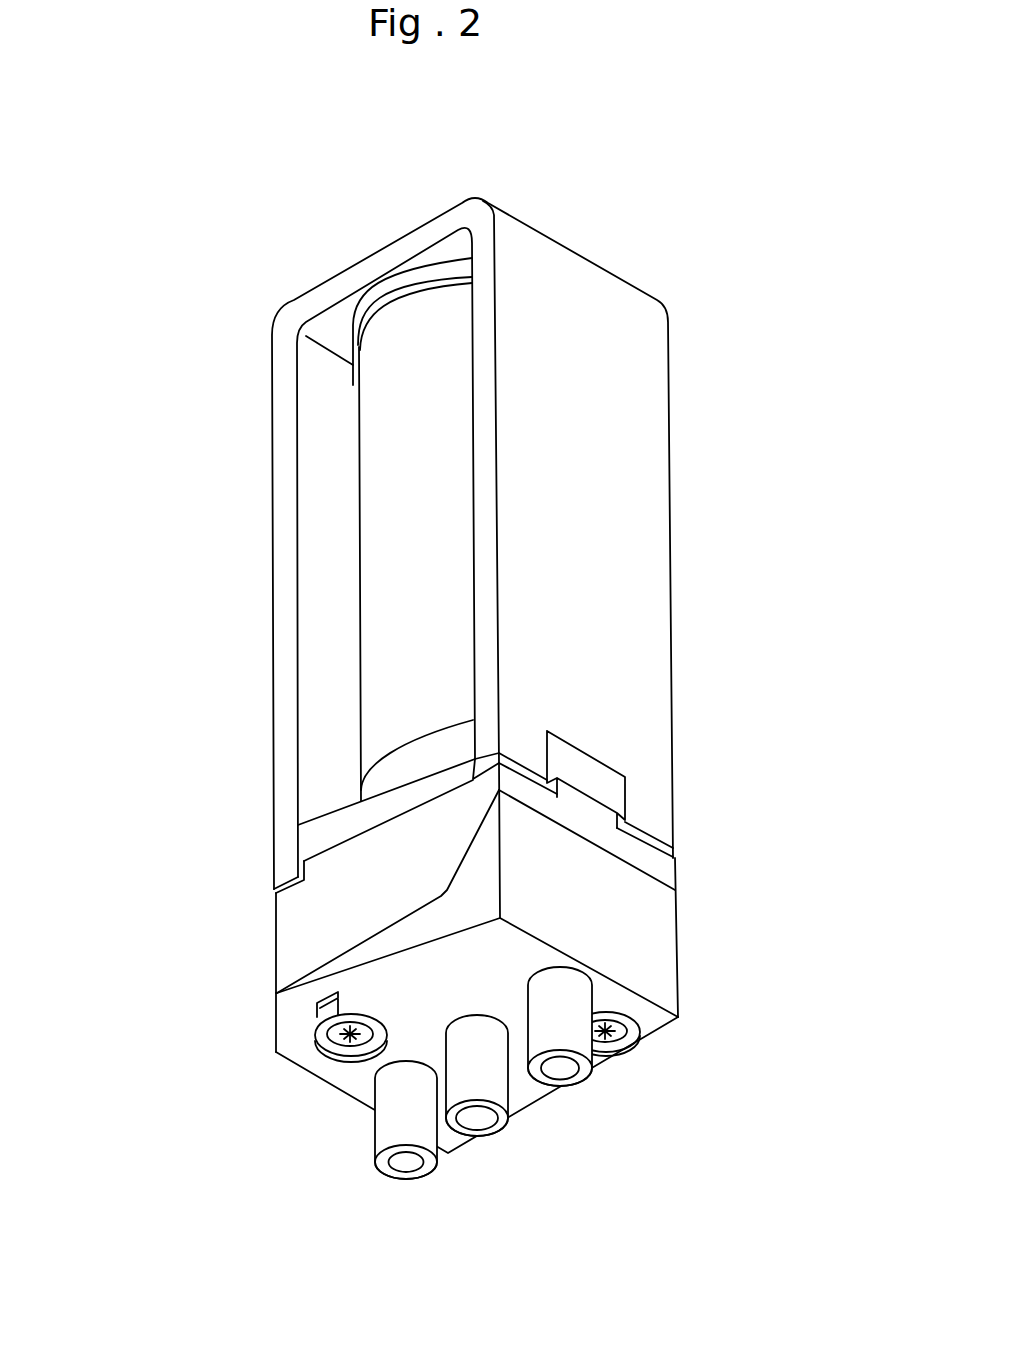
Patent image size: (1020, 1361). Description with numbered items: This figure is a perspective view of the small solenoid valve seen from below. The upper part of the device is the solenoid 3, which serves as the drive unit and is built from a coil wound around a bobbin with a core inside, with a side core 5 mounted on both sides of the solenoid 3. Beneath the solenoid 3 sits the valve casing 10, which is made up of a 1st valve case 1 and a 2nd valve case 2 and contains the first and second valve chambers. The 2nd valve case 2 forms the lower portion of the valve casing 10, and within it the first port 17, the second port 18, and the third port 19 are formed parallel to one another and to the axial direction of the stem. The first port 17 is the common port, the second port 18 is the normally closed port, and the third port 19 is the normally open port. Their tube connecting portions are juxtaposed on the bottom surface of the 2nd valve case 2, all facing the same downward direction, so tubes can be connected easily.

The 1st valve case 1 is at (295, 930).
The 2nd valve case 2 is at (165, 903).
The solenoid 3 is at (357, 425).
The side core 5 is at (282, 547).
The valve casing 10 is at (445, 958).
The first port 17 is at (408, 1163).
The second port 18 is at (477, 1120).
The third port 19 is at (563, 1068).